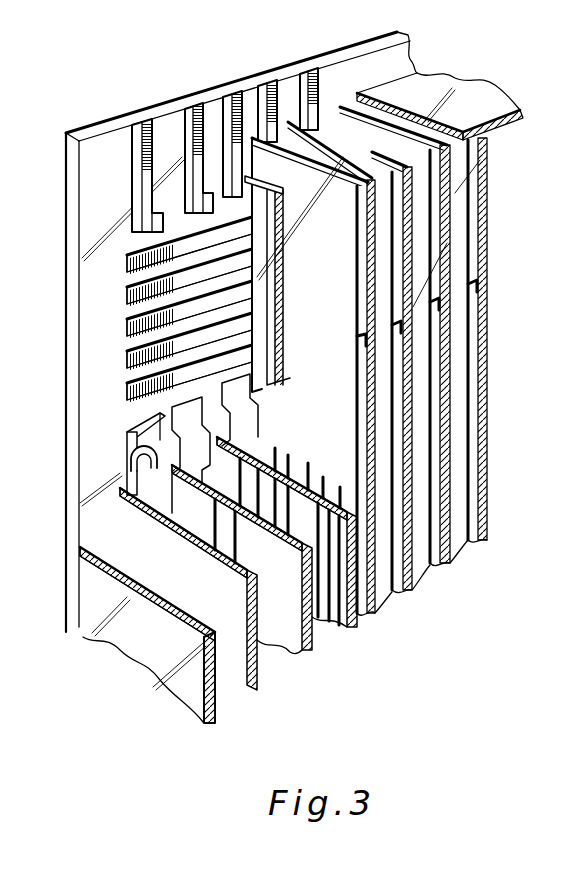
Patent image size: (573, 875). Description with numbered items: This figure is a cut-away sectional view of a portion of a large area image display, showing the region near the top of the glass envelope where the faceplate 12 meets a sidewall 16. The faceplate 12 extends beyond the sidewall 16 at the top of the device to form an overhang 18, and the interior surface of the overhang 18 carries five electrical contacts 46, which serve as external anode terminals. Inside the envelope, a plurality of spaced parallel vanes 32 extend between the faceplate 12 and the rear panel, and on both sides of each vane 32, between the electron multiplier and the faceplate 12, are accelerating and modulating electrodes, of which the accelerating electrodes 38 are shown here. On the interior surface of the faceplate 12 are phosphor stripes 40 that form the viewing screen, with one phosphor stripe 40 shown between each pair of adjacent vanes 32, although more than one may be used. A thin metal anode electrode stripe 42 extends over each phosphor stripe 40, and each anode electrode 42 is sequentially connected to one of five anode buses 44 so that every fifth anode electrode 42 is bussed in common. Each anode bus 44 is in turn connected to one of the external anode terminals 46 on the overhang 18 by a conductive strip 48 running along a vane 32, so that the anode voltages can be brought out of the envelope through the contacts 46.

The faceplate 12 is at (87, 517).
The sidewall 16 is at (461, 100).
The overhang 18 is at (382, 52).
The vane 32 is at (447, 567).
The accelerating electrode 38 is at (290, 466).
The phosphor stripe 40 is at (130, 466).
The anode electrode stripe 42 is at (133, 426).
The anode bus 44 is at (130, 296).
The electrical contact 46 is at (270, 85).
The conductive strip 48 is at (283, 234).